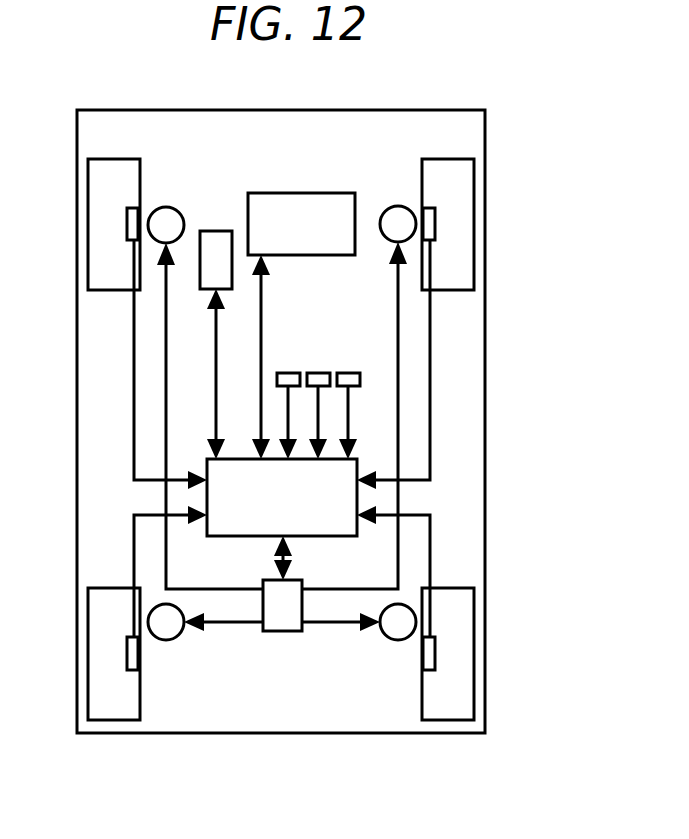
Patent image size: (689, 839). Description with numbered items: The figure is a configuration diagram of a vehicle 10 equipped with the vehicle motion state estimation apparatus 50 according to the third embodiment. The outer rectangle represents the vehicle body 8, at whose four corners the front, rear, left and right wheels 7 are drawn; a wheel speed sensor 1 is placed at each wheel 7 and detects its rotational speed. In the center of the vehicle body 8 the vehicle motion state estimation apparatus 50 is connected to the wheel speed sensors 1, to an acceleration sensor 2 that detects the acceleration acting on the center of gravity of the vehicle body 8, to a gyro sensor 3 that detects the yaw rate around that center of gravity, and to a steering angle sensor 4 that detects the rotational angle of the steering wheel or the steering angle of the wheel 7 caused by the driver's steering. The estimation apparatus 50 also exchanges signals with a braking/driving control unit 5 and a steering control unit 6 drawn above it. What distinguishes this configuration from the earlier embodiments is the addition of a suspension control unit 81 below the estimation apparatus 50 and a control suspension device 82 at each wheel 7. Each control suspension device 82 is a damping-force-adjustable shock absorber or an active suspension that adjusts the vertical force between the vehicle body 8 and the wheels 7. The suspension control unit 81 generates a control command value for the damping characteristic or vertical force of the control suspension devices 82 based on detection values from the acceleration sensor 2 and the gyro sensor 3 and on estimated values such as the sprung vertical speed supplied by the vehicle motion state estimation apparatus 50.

The wheel speed sensor 1 is at (126, 222).
The acceleration sensor 2 is at (290, 372).
The gyro sensor 3 is at (320, 372).
The steering angle sensor 4 is at (350, 372).
The braking/driving control unit 5 is at (290, 193).
The steering control unit 6 is at (216, 231).
The wheel 7 is at (88, 257).
The vehicle body 8 is at (485, 413).
The vehicle 10 is at (400, 110).
The vehicle motion state estimation apparatus 50 is at (357, 497).
The suspension control unit 81 is at (283, 632).
The control suspension device 82 is at (168, 208).